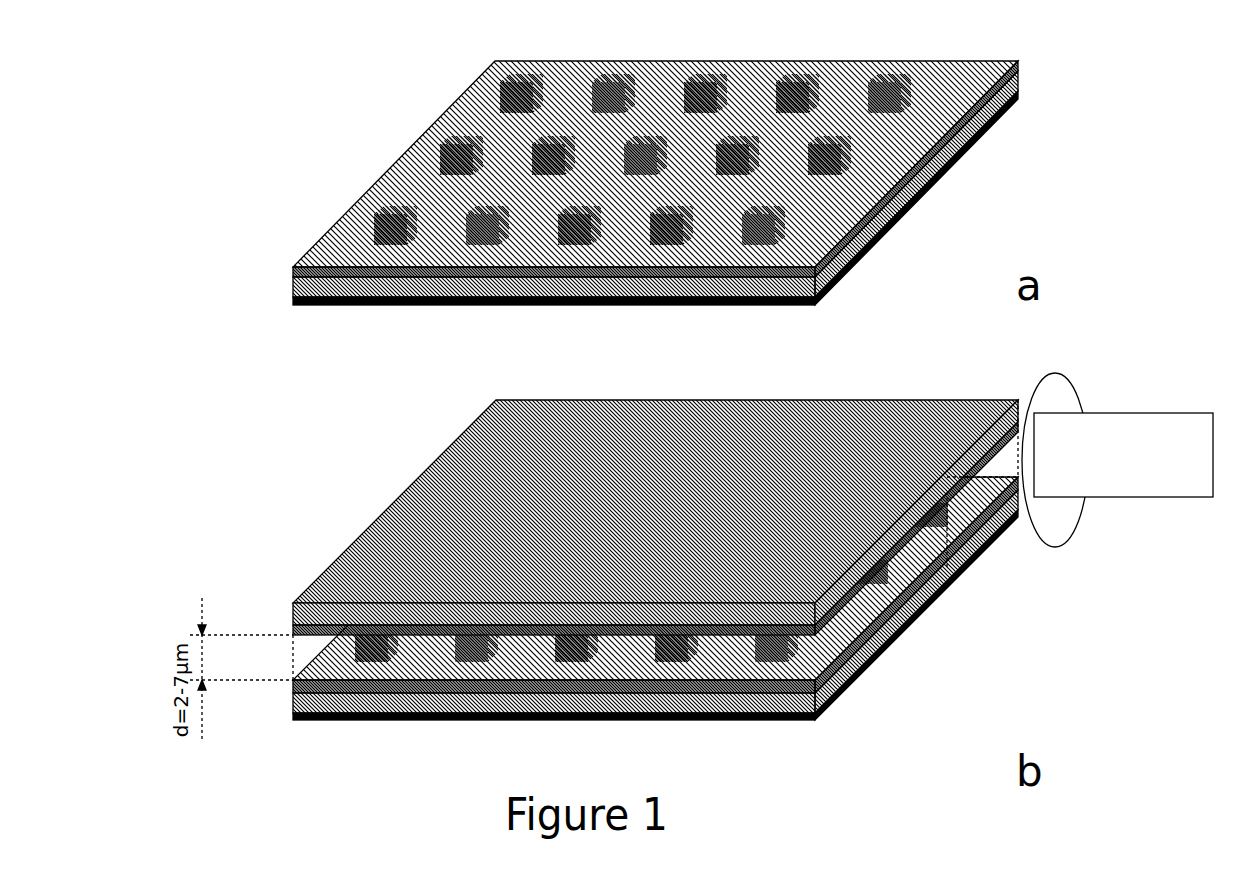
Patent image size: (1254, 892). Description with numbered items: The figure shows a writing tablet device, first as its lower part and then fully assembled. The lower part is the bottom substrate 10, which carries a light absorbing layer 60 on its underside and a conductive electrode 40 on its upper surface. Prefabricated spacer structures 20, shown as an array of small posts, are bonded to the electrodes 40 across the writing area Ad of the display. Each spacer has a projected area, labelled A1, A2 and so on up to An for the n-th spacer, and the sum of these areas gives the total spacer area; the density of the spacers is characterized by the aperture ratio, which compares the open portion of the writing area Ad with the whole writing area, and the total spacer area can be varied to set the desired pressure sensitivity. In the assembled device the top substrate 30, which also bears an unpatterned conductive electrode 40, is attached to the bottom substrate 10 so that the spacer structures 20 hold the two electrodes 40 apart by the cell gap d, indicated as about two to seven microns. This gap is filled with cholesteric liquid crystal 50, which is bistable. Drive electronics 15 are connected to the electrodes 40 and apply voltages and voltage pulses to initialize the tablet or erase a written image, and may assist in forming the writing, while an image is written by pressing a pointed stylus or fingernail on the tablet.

In FIG. 1a, the bottom substrate 10 is at (930, 190).
In FIG. 1b, the bottom substrate 10 is at (293, 700).
In FIG. 1b, the drive electronics 15 is at (1097, 413).
In FIG. 1a, the spacer structures 20 is at (685, 159).
In FIG. 1b, the spacer structures 20 is at (942, 530).
In FIG. 1b, the top substrate 30 is at (293, 617).
In FIG. 1a, the electrodes 40 is at (293, 270).
In FIG. 1b, the electrodes 40 is at (335, 637).
In FIG. 1b, the cholesteric liquid crystal 50 is at (887, 645).
In FIG. 1a, the light absorbing layer 60 is at (293, 300).
In FIG. 1b, the light absorbing layer 60 is at (833, 695).
In FIG. 1a, the area of first spacer A1 is at (530, 80).
In FIG. 1a, the area of second spacer A2 is at (458, 140).
In FIG. 1a, the writing area Ad is at (405, 187).
In FIG. 1a, the area of n-th spacer An is at (785, 220).